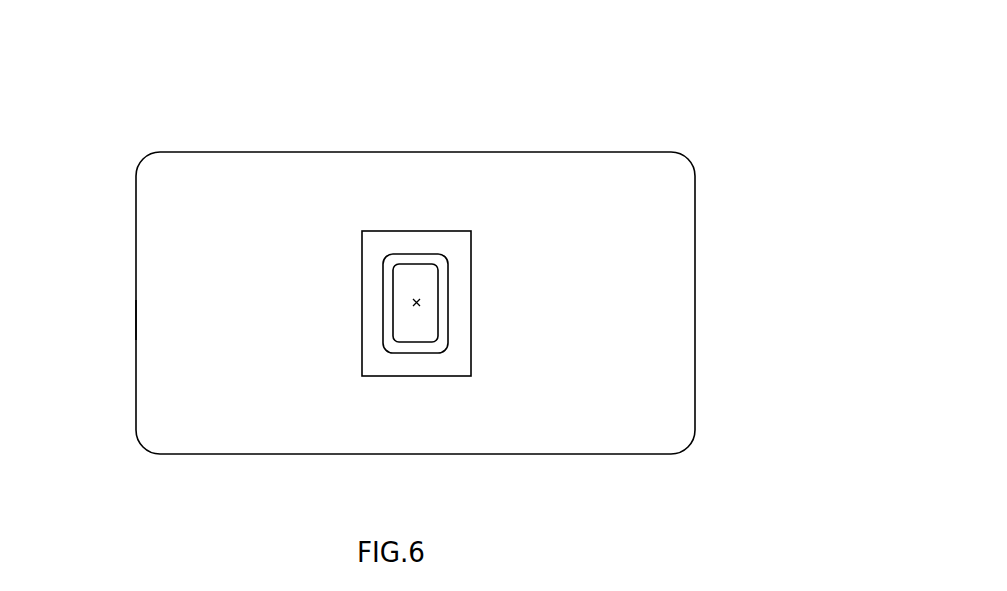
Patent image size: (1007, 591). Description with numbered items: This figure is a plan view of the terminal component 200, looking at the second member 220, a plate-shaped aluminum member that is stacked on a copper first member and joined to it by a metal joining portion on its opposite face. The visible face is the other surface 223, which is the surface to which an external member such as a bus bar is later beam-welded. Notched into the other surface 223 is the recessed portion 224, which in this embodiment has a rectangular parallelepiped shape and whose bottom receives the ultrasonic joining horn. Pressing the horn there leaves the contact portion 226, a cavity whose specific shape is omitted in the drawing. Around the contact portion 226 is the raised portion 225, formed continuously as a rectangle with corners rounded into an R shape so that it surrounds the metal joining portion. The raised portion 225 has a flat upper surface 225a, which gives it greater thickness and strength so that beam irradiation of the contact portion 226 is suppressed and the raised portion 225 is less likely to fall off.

The terminal component 200 is at (631, 73).
The second member 220 is at (136, 211).
The other surface 223 is at (162, 325).
The recessed portion 224 is at (387, 238).
The raised portion 225 is at (429, 254).
The upper surface 225a is at (442, 329).
The contact portion 226 is at (416, 300).